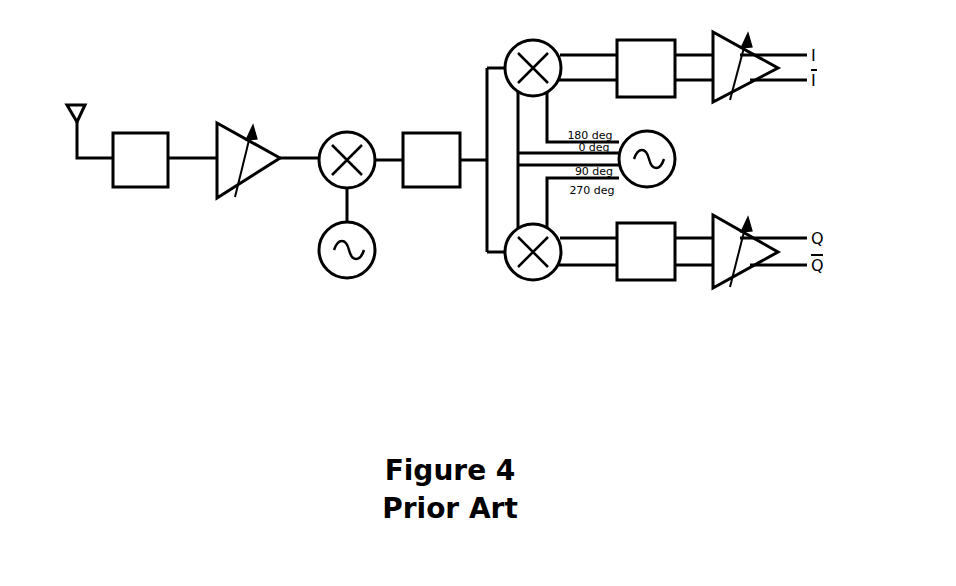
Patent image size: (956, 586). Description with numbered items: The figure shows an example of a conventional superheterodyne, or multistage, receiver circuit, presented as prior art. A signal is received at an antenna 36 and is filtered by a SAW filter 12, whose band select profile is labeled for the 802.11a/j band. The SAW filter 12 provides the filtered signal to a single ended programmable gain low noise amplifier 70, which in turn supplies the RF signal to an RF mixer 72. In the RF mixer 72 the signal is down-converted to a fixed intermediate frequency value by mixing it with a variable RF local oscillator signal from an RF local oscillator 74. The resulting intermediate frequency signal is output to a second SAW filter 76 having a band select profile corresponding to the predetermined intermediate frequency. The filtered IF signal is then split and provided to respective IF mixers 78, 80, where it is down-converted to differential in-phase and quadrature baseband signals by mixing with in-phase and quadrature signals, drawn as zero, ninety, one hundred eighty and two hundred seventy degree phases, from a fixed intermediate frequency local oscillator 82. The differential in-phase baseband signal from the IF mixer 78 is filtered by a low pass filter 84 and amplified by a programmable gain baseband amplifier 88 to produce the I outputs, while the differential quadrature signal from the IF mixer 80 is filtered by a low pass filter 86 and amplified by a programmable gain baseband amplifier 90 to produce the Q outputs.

The antenna 36 is at (80, 104).
The SAW filter 12 is at (150, 133).
The single ended programmable gain low noise amplifier 70 is at (231, 132).
The RF mixer 72 is at (350, 133).
The RF local oscillator 74 is at (375, 250).
The SAW filter 76 is at (439, 133).
The IF mixer 78 is at (538, 41).
The IF mixer 80 is at (536, 280).
The intermediate frequency local oscillator 82 is at (672, 146).
The low pass filter 84 is at (654, 40).
The low pass filter 86 is at (655, 280).
The programmable gain baseband amplifier 88 is at (726, 37).
The programmable gain baseband amplifier 90 is at (745, 275).